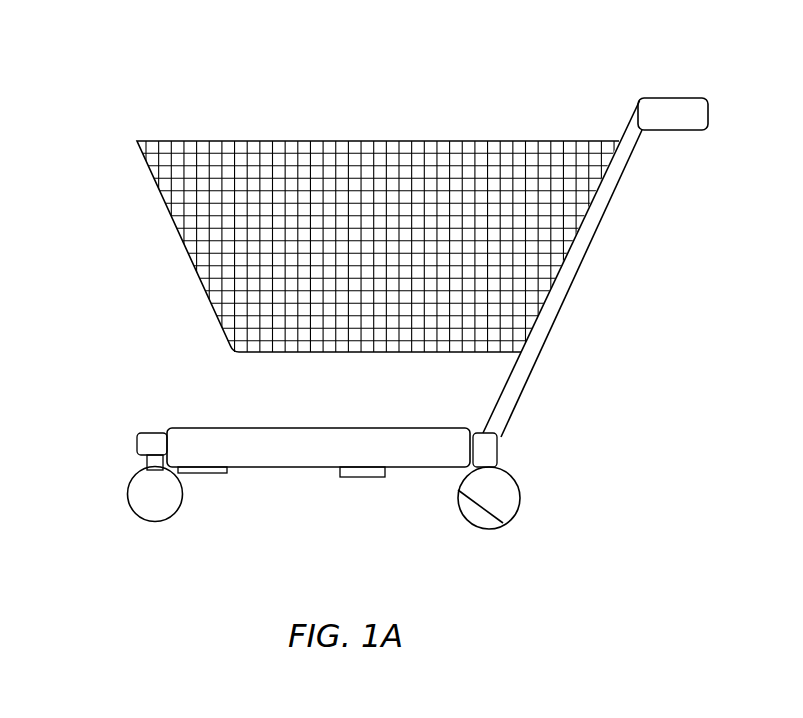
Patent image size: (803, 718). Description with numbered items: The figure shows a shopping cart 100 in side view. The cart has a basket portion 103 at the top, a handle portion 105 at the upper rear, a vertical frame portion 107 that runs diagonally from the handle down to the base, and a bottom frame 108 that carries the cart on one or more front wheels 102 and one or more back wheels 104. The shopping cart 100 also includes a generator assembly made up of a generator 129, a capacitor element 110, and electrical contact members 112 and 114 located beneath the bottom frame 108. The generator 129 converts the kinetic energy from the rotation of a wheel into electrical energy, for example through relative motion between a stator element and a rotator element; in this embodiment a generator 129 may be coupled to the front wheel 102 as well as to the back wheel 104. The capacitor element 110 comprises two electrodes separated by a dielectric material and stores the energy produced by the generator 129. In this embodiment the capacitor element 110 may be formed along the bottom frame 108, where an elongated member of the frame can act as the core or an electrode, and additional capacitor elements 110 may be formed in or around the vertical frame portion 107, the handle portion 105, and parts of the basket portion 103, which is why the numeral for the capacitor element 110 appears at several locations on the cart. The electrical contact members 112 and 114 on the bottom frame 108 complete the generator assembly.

The shopping cart 100 is at (186, 75).
The front wheel 102 is at (168, 518).
The basket portion 103 is at (408, 140).
The back wheel 104 is at (467, 523).
The handle portion 105 is at (667, 92).
The vertical frame portion 107 is at (580, 268).
The bottom frame 108 is at (138, 443).
The capacitor element 110 is at (703, 102).
The electrical contact member 112 is at (370, 477).
The electrical contact member 114 is at (212, 473).
The generator 129 is at (311, 509).